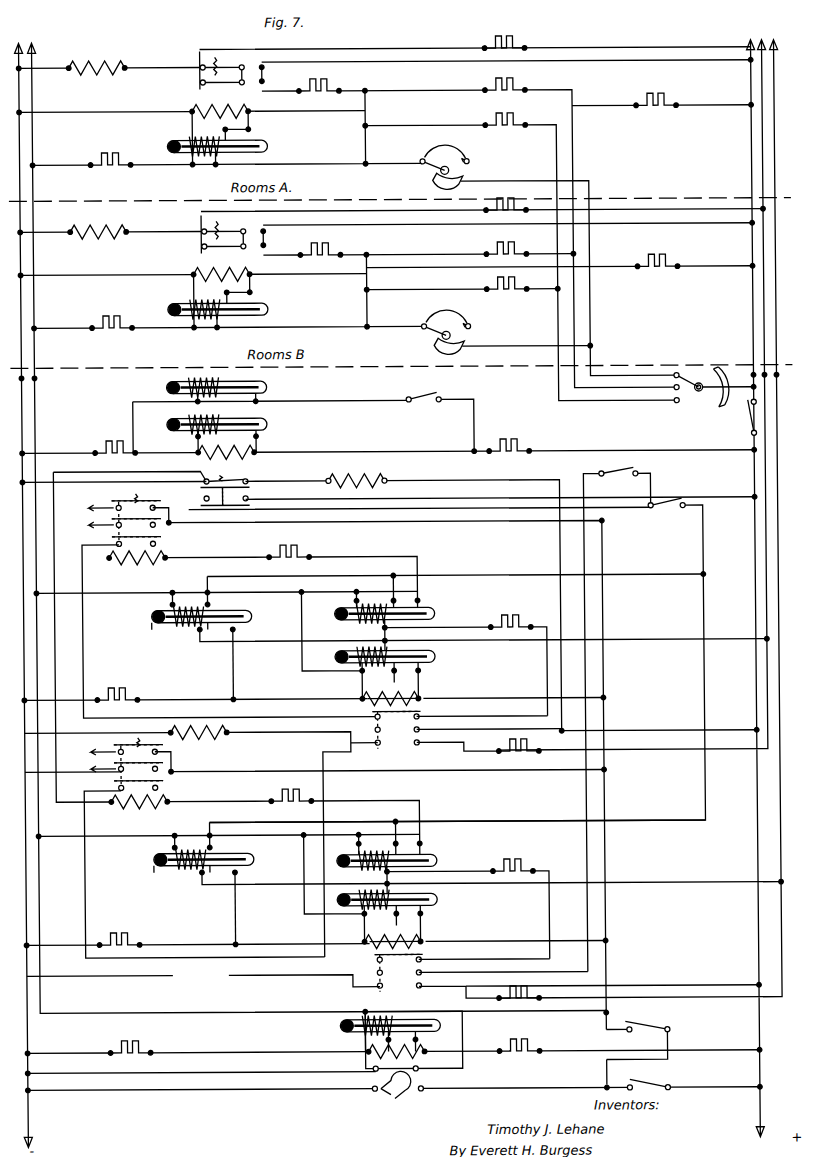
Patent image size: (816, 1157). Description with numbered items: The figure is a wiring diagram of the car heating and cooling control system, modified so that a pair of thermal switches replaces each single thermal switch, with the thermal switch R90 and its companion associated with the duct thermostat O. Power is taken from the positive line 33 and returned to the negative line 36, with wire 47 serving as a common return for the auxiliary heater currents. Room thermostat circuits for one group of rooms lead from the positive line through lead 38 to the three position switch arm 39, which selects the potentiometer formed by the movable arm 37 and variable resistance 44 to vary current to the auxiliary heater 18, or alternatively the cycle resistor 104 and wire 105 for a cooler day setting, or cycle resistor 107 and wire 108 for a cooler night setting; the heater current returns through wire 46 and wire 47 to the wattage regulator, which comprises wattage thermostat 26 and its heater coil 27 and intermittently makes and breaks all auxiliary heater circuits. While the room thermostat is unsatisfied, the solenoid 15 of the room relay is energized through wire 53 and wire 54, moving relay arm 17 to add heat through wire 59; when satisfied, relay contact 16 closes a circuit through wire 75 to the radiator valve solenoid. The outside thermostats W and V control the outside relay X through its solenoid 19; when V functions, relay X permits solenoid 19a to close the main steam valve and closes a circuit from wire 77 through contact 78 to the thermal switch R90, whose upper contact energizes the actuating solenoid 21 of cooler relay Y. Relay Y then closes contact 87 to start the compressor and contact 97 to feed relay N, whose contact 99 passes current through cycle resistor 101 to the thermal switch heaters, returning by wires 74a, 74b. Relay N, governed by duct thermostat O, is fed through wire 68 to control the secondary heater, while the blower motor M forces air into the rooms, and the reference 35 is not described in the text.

The solenoid 15 is at (252, 139).
The relay contact 16 is at (451, 65).
The relay arm 17 is at (205, 103).
The auxiliary heater 18 is at (186, 180).
The solenoid 19 is at (262, 452).
The solenoid 19a is at (394, 470).
The actuating solenoid 21 is at (264, 822).
The wattage thermostat 26 is at (334, 1024).
The heater coil 27 is at (360, 1056).
The positive line 33 is at (740, 1028).
The switch 35 is at (210, 1046).
The negative line 36 is at (49, 182).
The movable arm 37 is at (536, 276).
The lead 38 is at (724, 378).
The three position switch arm 39 is at (696, 374).
The variable resistance 44 is at (434, 166).
The wire 46 is at (199, 141).
The wire 47 is at (38, 411).
The wire 53 is at (663, 95).
The wire 54 is at (191, 122).
The wire 59 is at (70, 58).
The wire 68 is at (492, 993).
The wire 74a is at (116, 846).
The wire 74b is at (122, 600).
The wire 75 is at (475, 50).
The wire 77 is at (721, 494).
The contact 78 is at (268, 491).
The contact 87 is at (204, 846).
The contact 97 is at (316, 767).
The contact 99 is at (457, 936).
The cycle resistor 101 is at (472, 902).
The cycle resistor 104 is at (580, 228).
The wire 105 is at (448, 80).
The cycle resistor 107 is at (581, 253).
The wire 108 is at (425, 117).
The electric motor M is at (397, 1095).
The relay N is at (394, 970).
The duct thermostat O is at (381, 888).
The thermal switch R90 is at (436, 868).
The outside thermostat W is at (270, 408).
The outside thermostat V is at (232, 428).
The outside relay X is at (202, 472).
The cooler relay Y is at (78, 770).